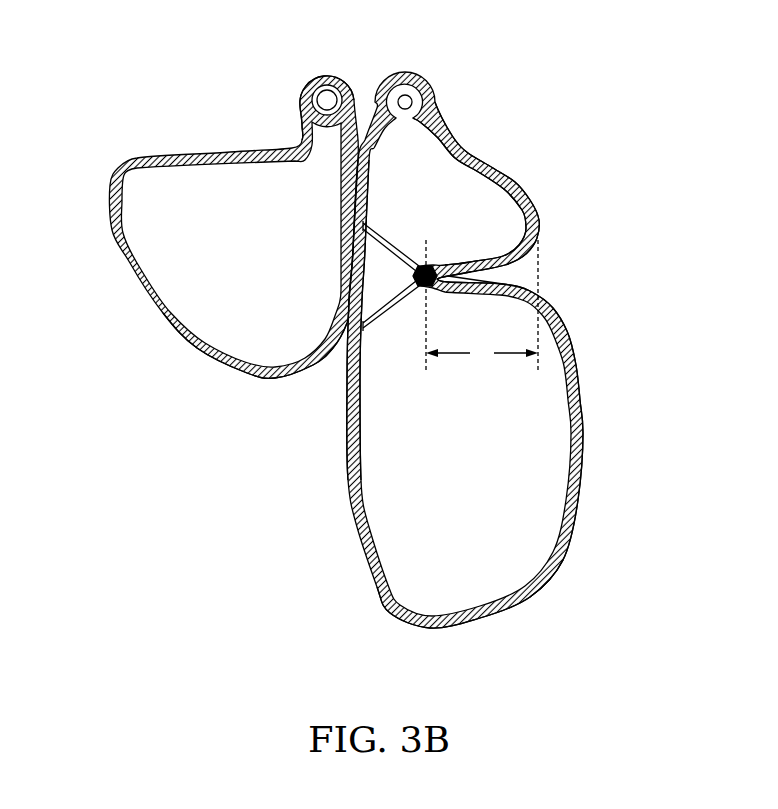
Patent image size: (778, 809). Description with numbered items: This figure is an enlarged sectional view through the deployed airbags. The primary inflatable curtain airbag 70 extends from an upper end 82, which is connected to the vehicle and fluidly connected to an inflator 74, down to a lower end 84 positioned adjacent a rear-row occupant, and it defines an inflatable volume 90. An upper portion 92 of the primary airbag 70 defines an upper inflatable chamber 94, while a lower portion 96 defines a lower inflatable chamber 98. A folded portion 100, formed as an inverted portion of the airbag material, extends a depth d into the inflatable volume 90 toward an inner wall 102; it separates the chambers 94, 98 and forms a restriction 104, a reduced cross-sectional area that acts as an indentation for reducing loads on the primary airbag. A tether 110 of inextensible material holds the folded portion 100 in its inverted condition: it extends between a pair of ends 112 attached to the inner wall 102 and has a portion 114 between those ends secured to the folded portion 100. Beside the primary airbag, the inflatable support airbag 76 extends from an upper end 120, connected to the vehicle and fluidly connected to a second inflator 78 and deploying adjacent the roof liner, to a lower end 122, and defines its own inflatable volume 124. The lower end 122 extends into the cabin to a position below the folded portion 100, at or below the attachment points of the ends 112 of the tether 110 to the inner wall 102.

The primary inflatable curtain airbag 70 is at (594, 230).
The inflator 74 is at (402, 97).
The inflatable support airbag 76 is at (94, 248).
The inflator 78 is at (325, 90).
The upper end 82 is at (455, 101).
The lower end 84 is at (598, 589).
The inflatable volume 90 is at (396, 457).
The upper portion 92 is at (517, 188).
The upper inflatable chamber 94 is at (431, 180).
The lower portion 96 is at (587, 447).
The lower inflatable chamber 98 is at (540, 402).
The folded portion 100 is at (378, 279).
The inner wall 102 is at (361, 393).
The restriction 104 is at (425, 290).
The tether 110 is at (398, 243).
The ends 112 is at (363, 228).
The portion 114 is at (432, 265).
The upper end 120 is at (287, 100).
The lower end 122 is at (212, 378).
The inflatable volume 124 is at (156, 206).